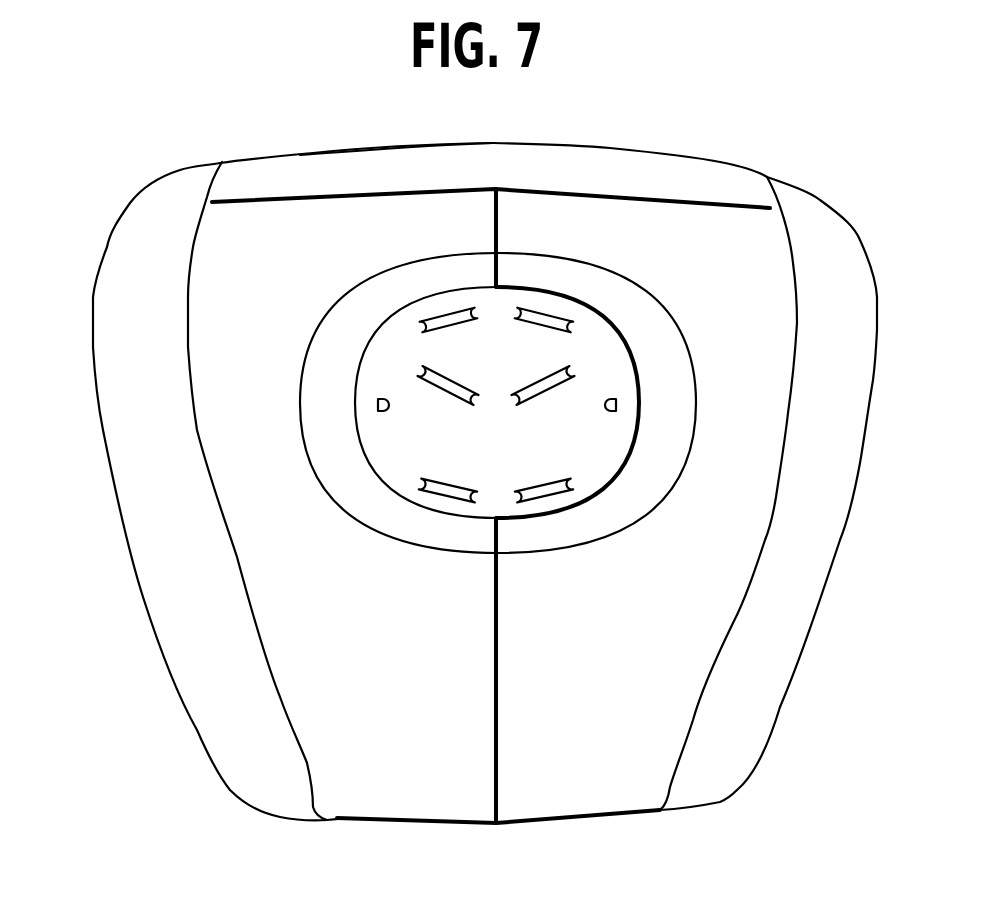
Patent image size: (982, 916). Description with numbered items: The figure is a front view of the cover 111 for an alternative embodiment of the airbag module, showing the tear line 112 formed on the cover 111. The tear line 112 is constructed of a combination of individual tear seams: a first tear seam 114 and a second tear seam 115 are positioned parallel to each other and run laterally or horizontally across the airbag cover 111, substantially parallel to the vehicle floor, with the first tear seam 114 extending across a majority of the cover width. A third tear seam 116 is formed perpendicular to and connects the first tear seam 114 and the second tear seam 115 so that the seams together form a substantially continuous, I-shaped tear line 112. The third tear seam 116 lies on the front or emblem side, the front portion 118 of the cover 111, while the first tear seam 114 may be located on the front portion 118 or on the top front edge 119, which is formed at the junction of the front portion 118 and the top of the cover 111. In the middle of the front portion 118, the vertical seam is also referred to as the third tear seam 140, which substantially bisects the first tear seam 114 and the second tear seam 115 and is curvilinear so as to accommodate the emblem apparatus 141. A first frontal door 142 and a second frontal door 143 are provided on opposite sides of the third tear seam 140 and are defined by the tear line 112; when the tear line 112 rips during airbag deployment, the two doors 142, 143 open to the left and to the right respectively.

The cover 111 is at (174, 116).
The tear line 112 is at (495, 216).
The first tear seam 114 is at (273, 193).
The second tear seam 115 is at (505, 827).
The third tear seam 116 is at (497, 683).
The front portion 118 is at (378, 643).
The top front edge 119 is at (497, 165).
The third tear seam 140 is at (623, 330).
The emblem apparatus 141 is at (497, 378).
The first frontal door 142 is at (262, 522).
The second frontal door 143 is at (690, 580).